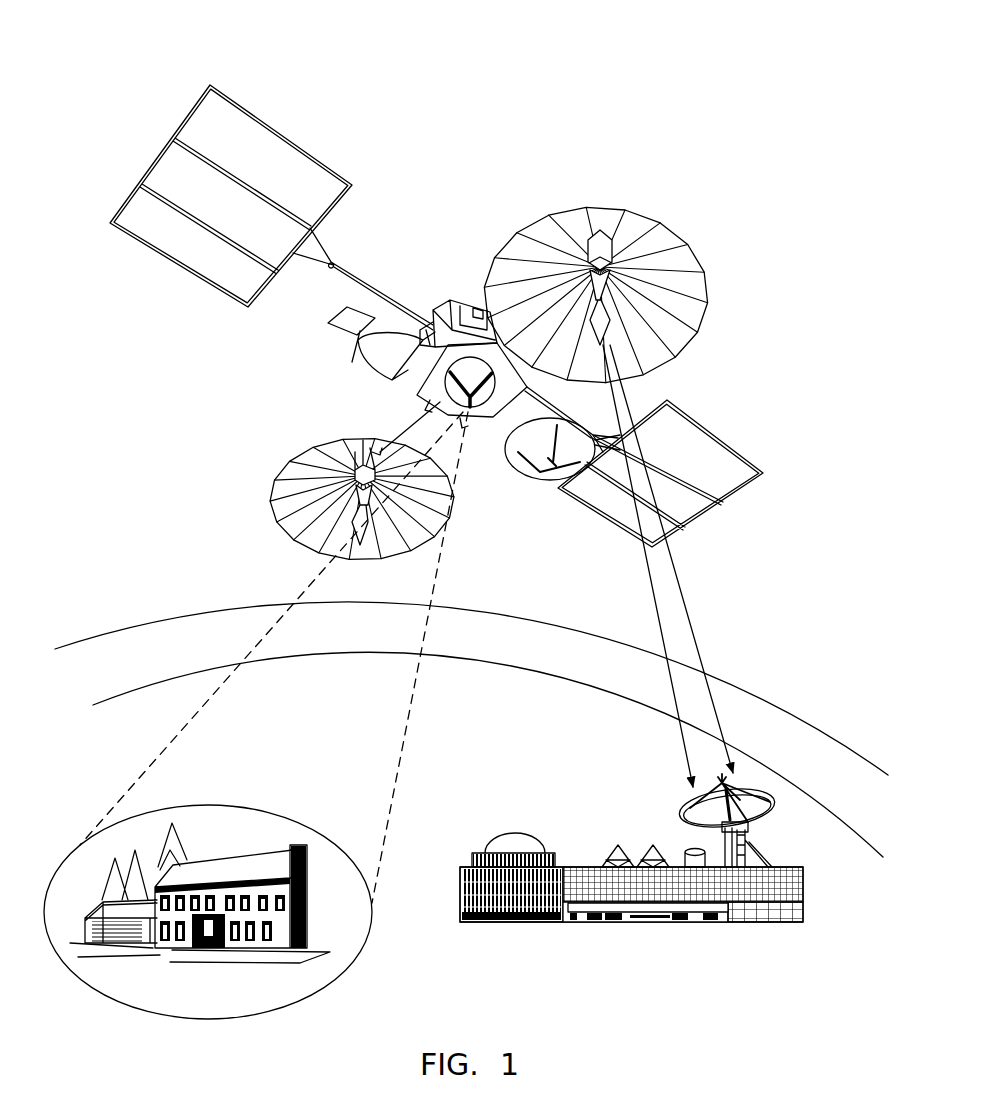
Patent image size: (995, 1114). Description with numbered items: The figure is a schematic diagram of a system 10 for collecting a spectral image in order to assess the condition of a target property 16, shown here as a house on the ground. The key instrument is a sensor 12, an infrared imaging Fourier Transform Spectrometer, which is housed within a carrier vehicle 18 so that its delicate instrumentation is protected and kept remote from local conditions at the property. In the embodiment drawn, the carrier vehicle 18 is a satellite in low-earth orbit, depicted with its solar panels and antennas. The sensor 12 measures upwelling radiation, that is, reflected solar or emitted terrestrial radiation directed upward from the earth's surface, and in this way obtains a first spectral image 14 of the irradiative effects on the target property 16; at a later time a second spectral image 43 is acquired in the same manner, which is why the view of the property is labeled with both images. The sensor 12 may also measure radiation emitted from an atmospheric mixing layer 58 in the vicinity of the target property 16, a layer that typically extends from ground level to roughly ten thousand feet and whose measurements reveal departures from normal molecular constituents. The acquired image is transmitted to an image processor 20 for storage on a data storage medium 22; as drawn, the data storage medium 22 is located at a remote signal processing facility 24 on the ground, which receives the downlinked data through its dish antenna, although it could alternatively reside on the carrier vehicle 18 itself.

The system 10 is at (548, 92).
The carrier vehicle 18 is at (420, 216).
The image processor 20 is at (434, 310).
The sensor 12 is at (490, 393).
The atmospheric mixing layer 58 is at (160, 645).
The first spectral image 14 is at (208, 893).
The second spectral image 43 is at (196, 806).
The target property 16 is at (245, 870).
The data storage medium 22 is at (690, 852).
The remote signal processing facility 24 is at (800, 888).